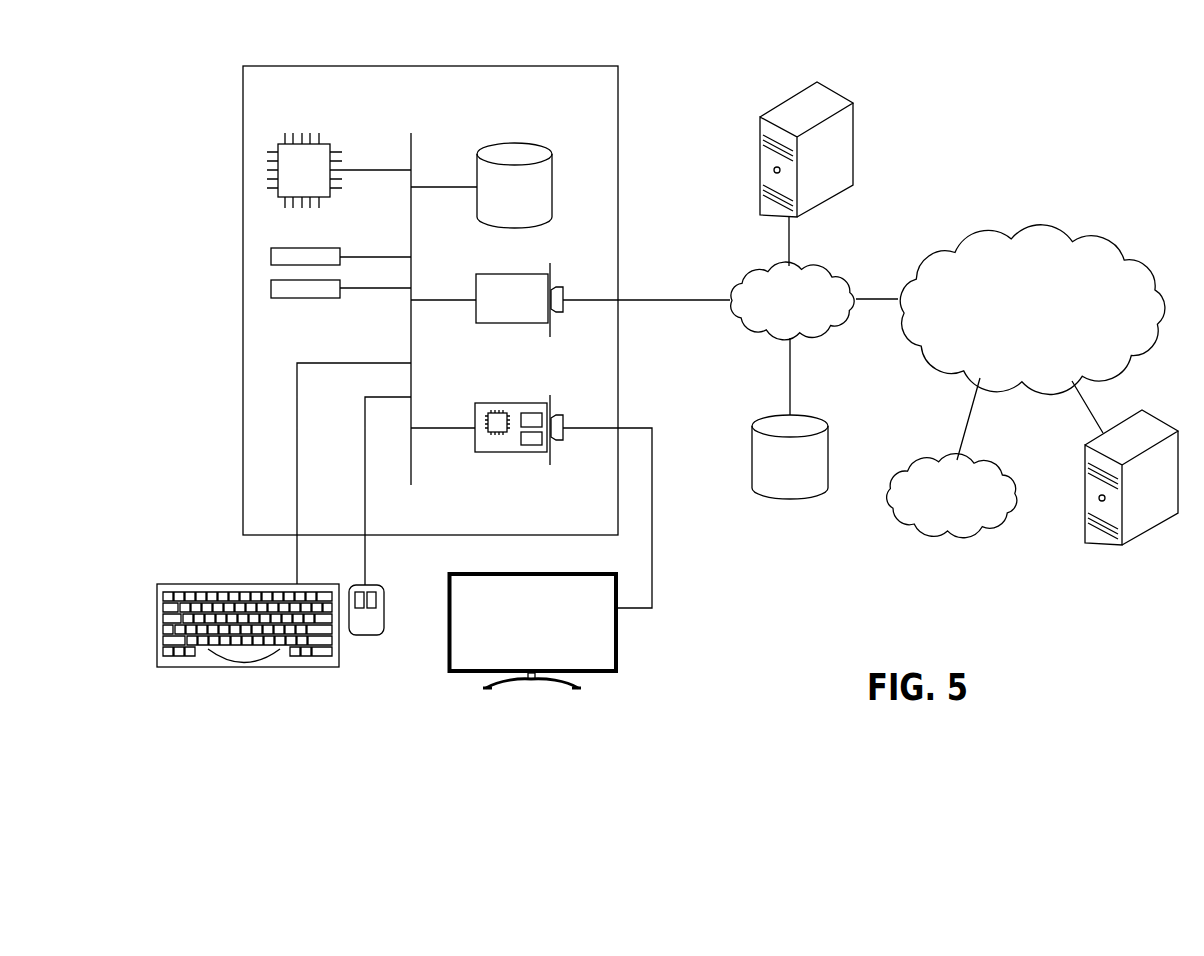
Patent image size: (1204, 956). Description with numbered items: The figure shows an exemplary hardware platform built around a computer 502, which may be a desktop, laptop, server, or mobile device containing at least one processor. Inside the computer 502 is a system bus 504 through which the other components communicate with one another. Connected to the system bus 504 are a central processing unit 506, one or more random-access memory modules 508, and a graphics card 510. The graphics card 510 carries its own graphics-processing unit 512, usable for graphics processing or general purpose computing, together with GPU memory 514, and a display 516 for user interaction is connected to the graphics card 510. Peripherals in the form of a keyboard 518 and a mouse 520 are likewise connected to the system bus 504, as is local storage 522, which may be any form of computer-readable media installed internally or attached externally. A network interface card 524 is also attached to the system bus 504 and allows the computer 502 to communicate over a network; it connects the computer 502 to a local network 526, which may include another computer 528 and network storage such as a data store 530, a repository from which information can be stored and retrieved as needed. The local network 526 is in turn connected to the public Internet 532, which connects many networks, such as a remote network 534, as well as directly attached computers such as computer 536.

The computer 502 is at (578, 66).
The system bus 504 is at (413, 143).
The central processing unit 506 is at (327, 144).
The random-access memory modules 508 is at (341, 283).
The graphics card 510 is at (545, 490).
The graphics-processing unit 512 is at (497, 432).
The GPU memory 514 is at (531, 445).
The display 516 is at (618, 657).
The keyboard 518 is at (252, 670).
The mouse 520 is at (362, 636).
The local storage 522 is at (554, 170).
The network interface card 524 is at (476, 283).
The local network 526 is at (840, 262).
The computer 528 is at (840, 92).
The data store 530 is at (818, 417).
The public Internet 532 is at (1073, 230).
The remote network 534 is at (1002, 457).
The computer 536 is at (1157, 418).